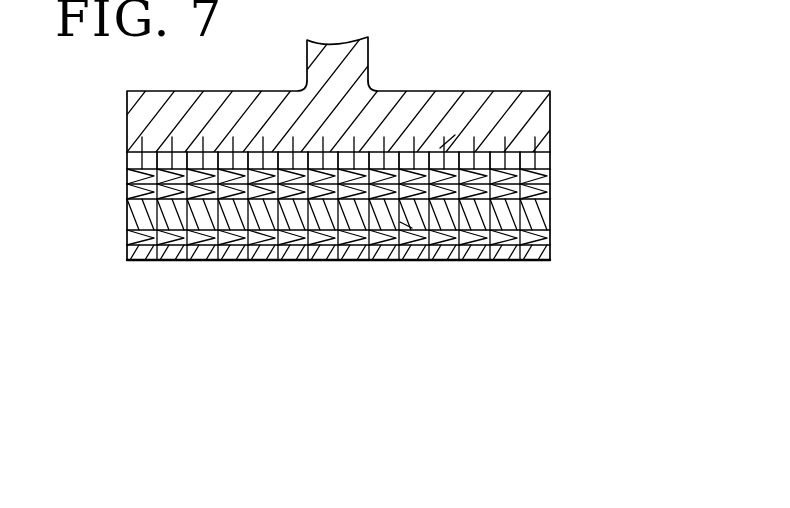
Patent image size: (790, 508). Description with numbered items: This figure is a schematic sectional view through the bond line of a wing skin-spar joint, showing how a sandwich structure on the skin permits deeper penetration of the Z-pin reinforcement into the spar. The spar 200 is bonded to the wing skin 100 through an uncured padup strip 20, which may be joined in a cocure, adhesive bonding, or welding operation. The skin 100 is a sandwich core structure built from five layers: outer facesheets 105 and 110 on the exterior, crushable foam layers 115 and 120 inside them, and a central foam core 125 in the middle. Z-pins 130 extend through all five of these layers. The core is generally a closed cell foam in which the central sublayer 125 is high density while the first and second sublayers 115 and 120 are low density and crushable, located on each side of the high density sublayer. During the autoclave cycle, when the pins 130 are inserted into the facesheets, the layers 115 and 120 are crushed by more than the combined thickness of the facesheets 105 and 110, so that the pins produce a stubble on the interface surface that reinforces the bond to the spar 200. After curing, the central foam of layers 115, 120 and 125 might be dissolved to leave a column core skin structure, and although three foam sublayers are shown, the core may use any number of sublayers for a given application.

The padup strip 20 is at (553, 158).
The spar 200 is at (369, 56).
The Z-pins 130 is at (442, 148).
The wing skin 100 is at (348, 231).
The outer facesheet 105 is at (553, 180).
The crushable foam layer 115 is at (553, 193).
The central foam core 125 is at (552, 220).
The crushable foam layer 120 is at (551, 240).
The outer facesheet 110 is at (543, 263).